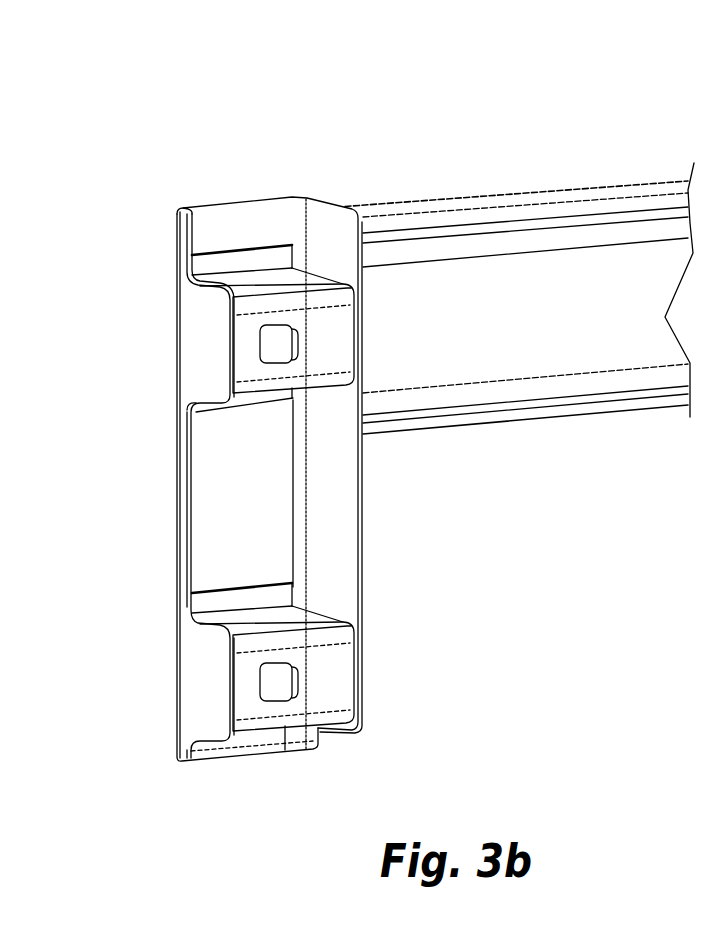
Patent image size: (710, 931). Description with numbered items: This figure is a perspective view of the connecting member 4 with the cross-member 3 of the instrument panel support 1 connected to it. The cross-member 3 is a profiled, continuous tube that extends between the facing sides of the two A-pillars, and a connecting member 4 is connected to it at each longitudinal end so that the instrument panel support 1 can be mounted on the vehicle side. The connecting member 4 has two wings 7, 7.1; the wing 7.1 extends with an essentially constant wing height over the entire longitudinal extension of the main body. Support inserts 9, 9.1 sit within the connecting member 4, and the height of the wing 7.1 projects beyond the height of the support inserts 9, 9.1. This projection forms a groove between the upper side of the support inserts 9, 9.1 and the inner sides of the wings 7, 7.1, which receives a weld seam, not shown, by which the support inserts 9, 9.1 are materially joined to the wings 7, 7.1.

The instrument panel support 1 is at (423, 187).
The cross-member 3 is at (521, 332).
The connecting member 4 is at (392, 601).
The wing 7 is at (190, 397).
The wing 7.1 is at (338, 448).
The support insert 9 is at (268, 290).
The support insert 9.1 is at (300, 623).